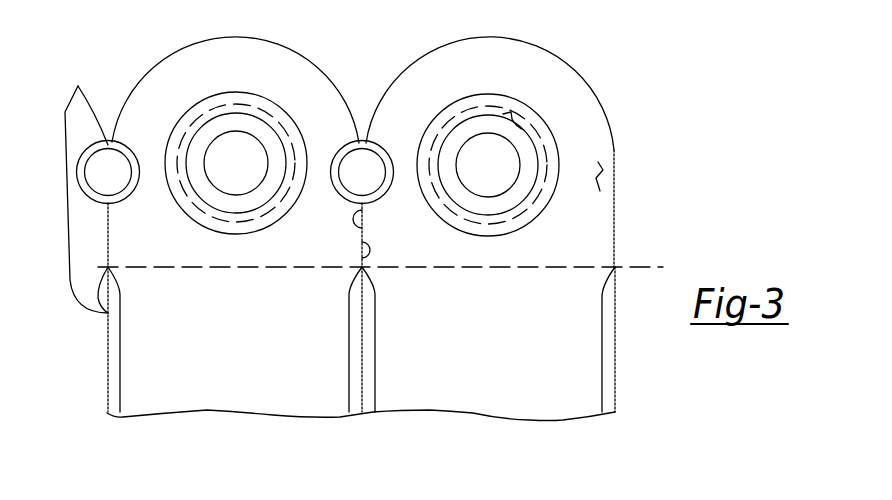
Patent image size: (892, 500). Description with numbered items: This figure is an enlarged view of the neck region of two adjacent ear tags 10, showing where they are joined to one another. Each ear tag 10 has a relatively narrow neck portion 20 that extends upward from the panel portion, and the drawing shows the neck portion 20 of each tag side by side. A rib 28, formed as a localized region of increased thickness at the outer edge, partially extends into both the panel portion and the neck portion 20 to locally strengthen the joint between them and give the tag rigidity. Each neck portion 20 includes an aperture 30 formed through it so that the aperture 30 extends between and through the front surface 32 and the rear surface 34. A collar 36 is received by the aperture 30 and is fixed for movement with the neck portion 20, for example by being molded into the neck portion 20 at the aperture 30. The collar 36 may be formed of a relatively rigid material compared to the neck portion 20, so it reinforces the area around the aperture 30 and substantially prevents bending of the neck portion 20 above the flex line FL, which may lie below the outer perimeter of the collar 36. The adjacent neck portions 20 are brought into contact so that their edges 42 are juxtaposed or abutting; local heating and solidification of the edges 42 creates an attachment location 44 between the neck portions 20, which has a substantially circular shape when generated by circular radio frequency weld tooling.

The ear tag 10 is at (202, 44).
The neck portion 20 is at (575, 262).
The rib 28 is at (612, 363).
The aperture 30 is at (523, 128).
The front surface 32 is at (485, 354).
The rear surface 34 is at (613, 182).
The collar 36 is at (557, 153).
The edges 42 is at (360, 257).
The attachment location 44 is at (117, 173).
The flex line FL is at (166, 266).